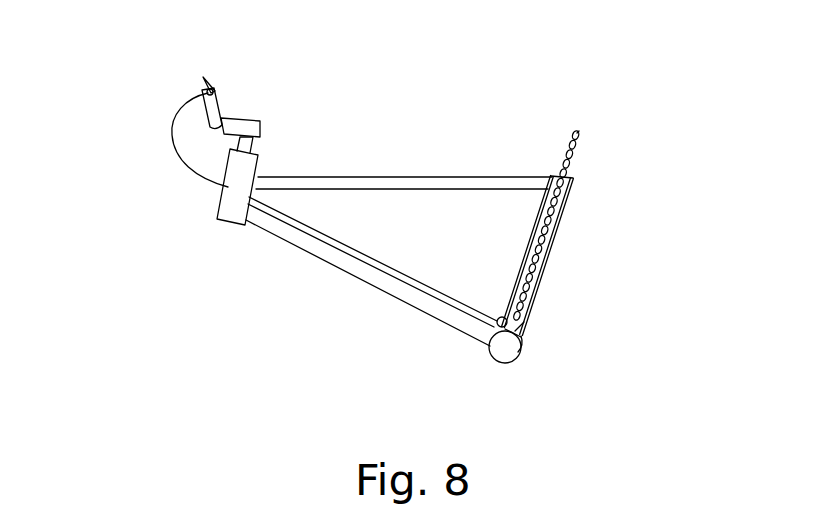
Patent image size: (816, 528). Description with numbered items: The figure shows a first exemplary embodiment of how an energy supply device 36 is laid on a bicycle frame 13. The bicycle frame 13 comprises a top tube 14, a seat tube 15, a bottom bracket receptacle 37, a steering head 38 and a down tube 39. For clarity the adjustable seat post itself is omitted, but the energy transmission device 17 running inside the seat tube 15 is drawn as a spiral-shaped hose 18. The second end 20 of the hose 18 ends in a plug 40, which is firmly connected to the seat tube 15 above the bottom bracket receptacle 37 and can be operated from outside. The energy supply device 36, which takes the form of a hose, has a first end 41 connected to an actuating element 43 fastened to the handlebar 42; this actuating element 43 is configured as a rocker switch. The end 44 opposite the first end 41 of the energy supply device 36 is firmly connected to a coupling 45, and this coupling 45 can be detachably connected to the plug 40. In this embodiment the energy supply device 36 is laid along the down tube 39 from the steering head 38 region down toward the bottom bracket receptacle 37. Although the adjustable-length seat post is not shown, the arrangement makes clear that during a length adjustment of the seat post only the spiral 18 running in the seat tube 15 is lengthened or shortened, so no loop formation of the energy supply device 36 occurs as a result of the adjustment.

The bicycle frame 13 is at (634, 219).
The top tube 14 is at (383, 176).
The seat tube 15 is at (558, 240).
The energy transmission device 17 is at (578, 146).
The spiral-shaped hose 18 is at (574, 158).
The second end 20 is at (527, 327).
The energy supply device 36 is at (170, 135).
The bottom bracket receptacle 37 is at (504, 352).
The steering head 38 is at (233, 218).
The down tube 39 is at (368, 277).
The plug 40 is at (523, 338).
The first end 41 is at (207, 90).
The handlebar 42 is at (213, 103).
The actuating element 43 is at (217, 92).
The end 44 is at (496, 320).
The coupling 45 is at (498, 316).